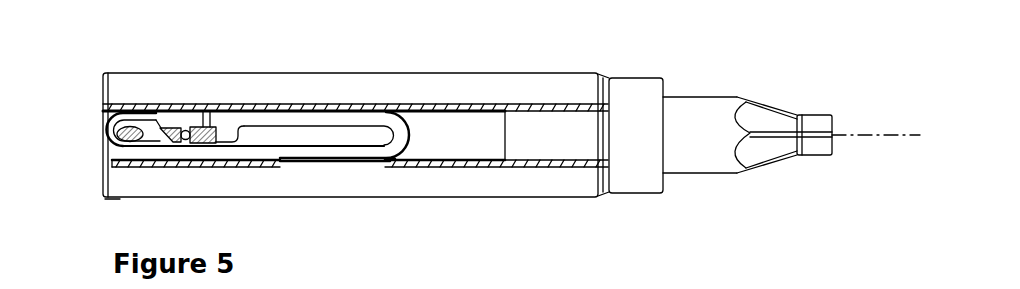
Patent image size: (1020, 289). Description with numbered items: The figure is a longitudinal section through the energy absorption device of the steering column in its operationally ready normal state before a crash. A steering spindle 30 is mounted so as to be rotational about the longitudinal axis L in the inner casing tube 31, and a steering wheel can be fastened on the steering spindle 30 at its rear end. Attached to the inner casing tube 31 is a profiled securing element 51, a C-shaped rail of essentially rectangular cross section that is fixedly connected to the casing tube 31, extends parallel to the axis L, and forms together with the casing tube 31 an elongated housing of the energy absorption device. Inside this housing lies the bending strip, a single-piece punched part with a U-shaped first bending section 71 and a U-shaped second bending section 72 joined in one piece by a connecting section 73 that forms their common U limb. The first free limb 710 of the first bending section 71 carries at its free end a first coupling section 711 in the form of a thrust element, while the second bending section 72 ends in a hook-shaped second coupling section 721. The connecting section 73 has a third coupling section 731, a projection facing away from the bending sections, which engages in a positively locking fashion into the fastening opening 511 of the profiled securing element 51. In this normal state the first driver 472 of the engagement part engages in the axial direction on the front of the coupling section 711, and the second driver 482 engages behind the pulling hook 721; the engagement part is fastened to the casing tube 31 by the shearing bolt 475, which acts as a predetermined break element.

The inner casing tube 31 is at (546, 84).
The steering spindle 30 is at (707, 123).
The profiled securing element 51 is at (549, 167).
The fastening opening 511 is at (378, 161).
The first bending section 71 is at (392, 118).
The first free limb 710 is at (310, 120).
The first coupling section 711 is at (229, 133).
The second bending section 72 is at (117, 128).
The second coupling section 721 is at (152, 132).
The second driver 482 is at (117, 137).
The shearing bolt 475 is at (184, 130).
The first driver 472 is at (208, 126).
The connecting section 73 is at (256, 150).
The third coupling section 731 is at (327, 163).
The axis L is at (888, 133).